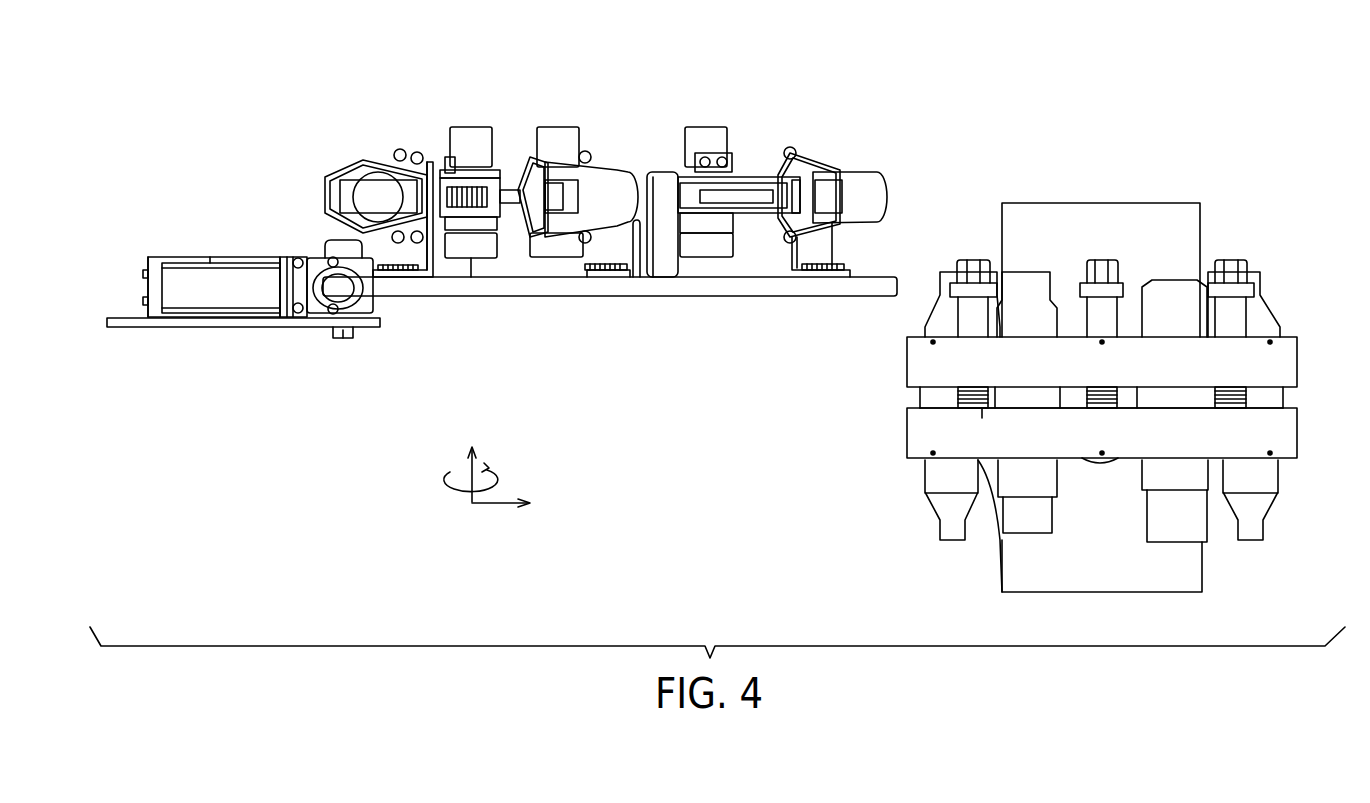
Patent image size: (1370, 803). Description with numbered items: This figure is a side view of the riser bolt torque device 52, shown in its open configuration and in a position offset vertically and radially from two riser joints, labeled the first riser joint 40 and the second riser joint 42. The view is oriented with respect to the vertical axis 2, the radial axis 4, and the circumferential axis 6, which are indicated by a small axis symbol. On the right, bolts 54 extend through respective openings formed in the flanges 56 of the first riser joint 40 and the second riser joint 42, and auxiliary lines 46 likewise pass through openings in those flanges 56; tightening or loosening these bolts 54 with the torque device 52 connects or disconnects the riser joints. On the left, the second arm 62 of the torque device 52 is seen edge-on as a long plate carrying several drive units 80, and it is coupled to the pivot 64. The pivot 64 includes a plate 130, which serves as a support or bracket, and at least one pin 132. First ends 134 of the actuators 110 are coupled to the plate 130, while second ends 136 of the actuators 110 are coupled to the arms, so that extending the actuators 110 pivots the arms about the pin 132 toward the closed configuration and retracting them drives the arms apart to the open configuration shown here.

The vertical axis 2 is at (470, 480).
The radial axis 4 is at (495, 507).
The circumferential axis 6 is at (462, 492).
The first riser joint 40 is at (1172, 204).
The second riser joint 42 is at (1202, 570).
The auxiliary lines 46 is at (940, 272).
The riser bolt torque device 52 is at (641, 56).
The bolts 54 is at (968, 262).
The flanges 56 is at (1282, 364).
The second arm 62 is at (582, 290).
The pivot 64 is at (182, 222).
The motor 80 is at (474, 134).
The actuators 110 is at (240, 292).
The plate 130 is at (120, 324).
The pin 132 is at (344, 340).
The first ends 134 is at (163, 288).
The second ends 136 is at (305, 292).